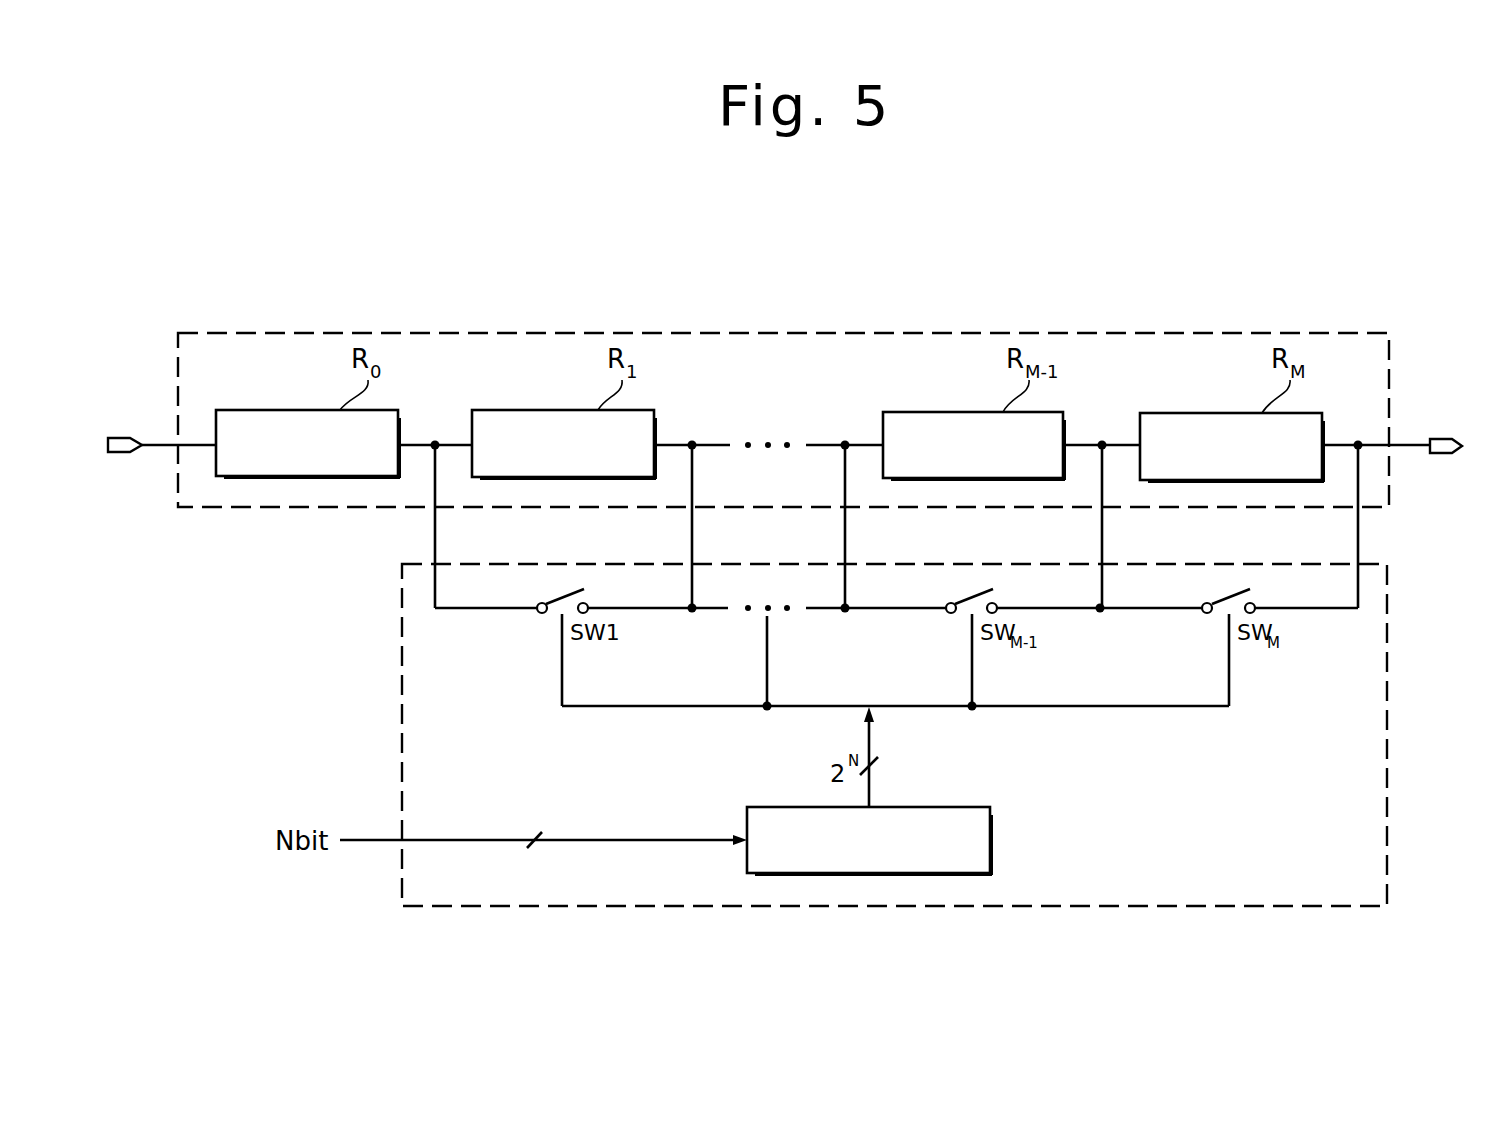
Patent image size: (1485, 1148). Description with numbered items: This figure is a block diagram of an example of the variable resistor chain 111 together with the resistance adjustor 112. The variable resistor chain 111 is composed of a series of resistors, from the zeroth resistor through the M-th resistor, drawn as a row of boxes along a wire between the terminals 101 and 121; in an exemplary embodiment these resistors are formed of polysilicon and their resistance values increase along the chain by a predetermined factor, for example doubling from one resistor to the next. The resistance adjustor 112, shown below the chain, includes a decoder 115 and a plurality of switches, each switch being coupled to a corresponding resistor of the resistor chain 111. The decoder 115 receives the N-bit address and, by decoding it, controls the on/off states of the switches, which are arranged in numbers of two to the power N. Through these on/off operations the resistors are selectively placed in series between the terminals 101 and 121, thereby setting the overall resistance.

The terminal 101 is at (118, 437).
The variable resistor chain 111 is at (975, 333).
The resistance adjustor 112 is at (402, 696).
The decoder 115 is at (948, 807).
The terminal 121 is at (1441, 439).